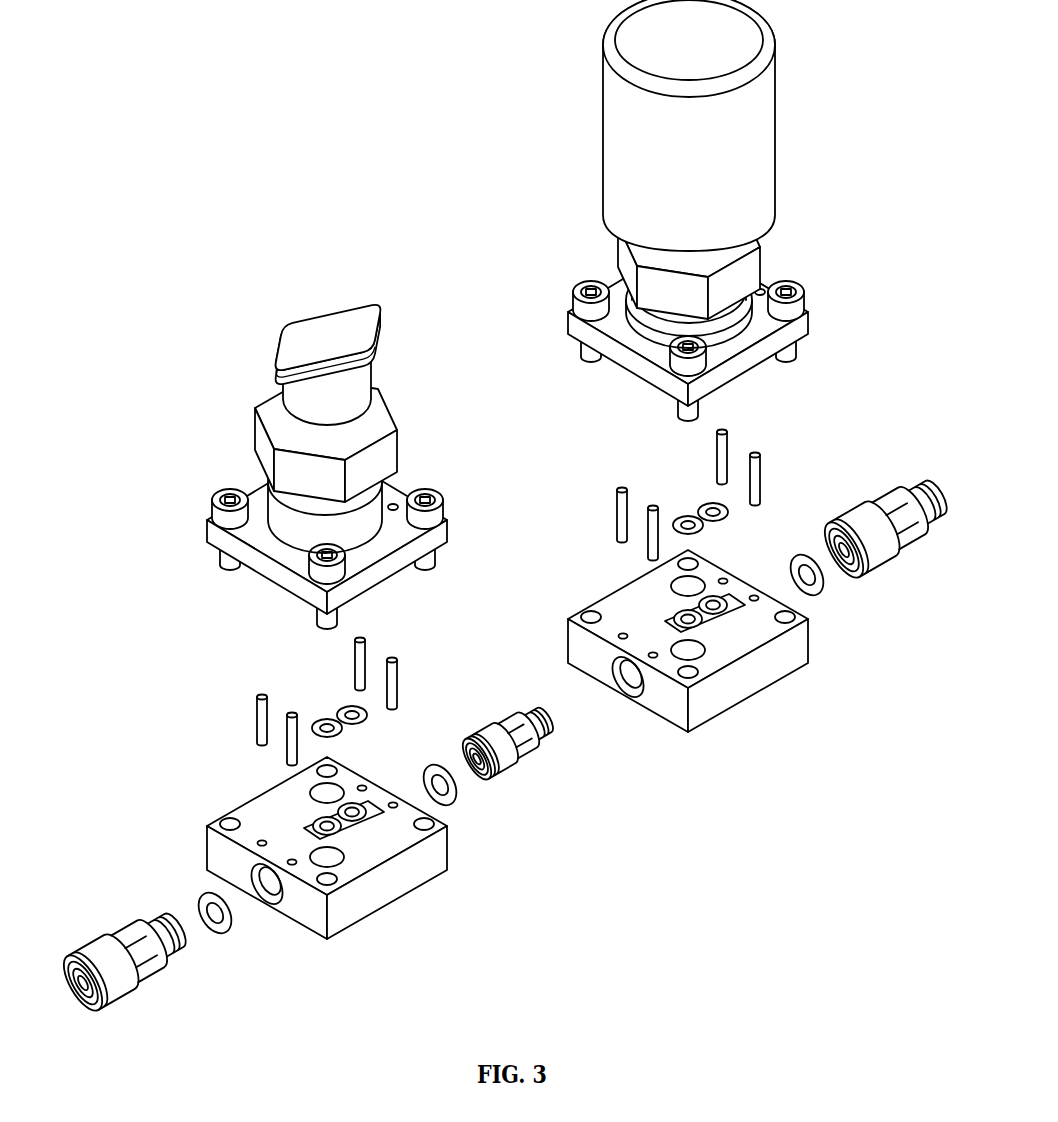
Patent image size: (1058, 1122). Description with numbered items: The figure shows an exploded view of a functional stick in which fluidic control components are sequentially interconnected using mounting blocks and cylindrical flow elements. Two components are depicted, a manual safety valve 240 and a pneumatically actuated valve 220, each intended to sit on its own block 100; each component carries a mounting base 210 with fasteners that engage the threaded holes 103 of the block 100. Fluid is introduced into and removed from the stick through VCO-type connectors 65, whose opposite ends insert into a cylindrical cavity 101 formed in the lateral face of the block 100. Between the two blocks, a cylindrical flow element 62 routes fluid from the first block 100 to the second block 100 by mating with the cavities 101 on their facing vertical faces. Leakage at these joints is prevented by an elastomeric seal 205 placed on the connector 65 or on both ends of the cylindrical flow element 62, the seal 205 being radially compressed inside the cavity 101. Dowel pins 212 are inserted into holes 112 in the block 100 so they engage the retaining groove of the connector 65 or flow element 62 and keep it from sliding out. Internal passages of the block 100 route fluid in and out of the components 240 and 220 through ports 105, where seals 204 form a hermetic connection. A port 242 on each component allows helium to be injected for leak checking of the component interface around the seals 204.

The cylindrical flow element 62 is at (523, 745).
The VCO-type connector 65 is at (150, 960).
The block 100 is at (382, 896).
The cylindrical cavity 101 is at (271, 895).
The threaded holes 103 is at (222, 822).
The ports 105 is at (355, 827).
The holes 112 is at (291, 860).
The seals 204 is at (347, 707).
The seal 205 is at (196, 895).
The mounting base with bolts 210 is at (800, 290).
The dowel pins 212 is at (288, 756).
The pneumatically actuated valve 220 is at (625, 85).
The manual safety valve 240 is at (292, 318).
The port 242 is at (766, 292).